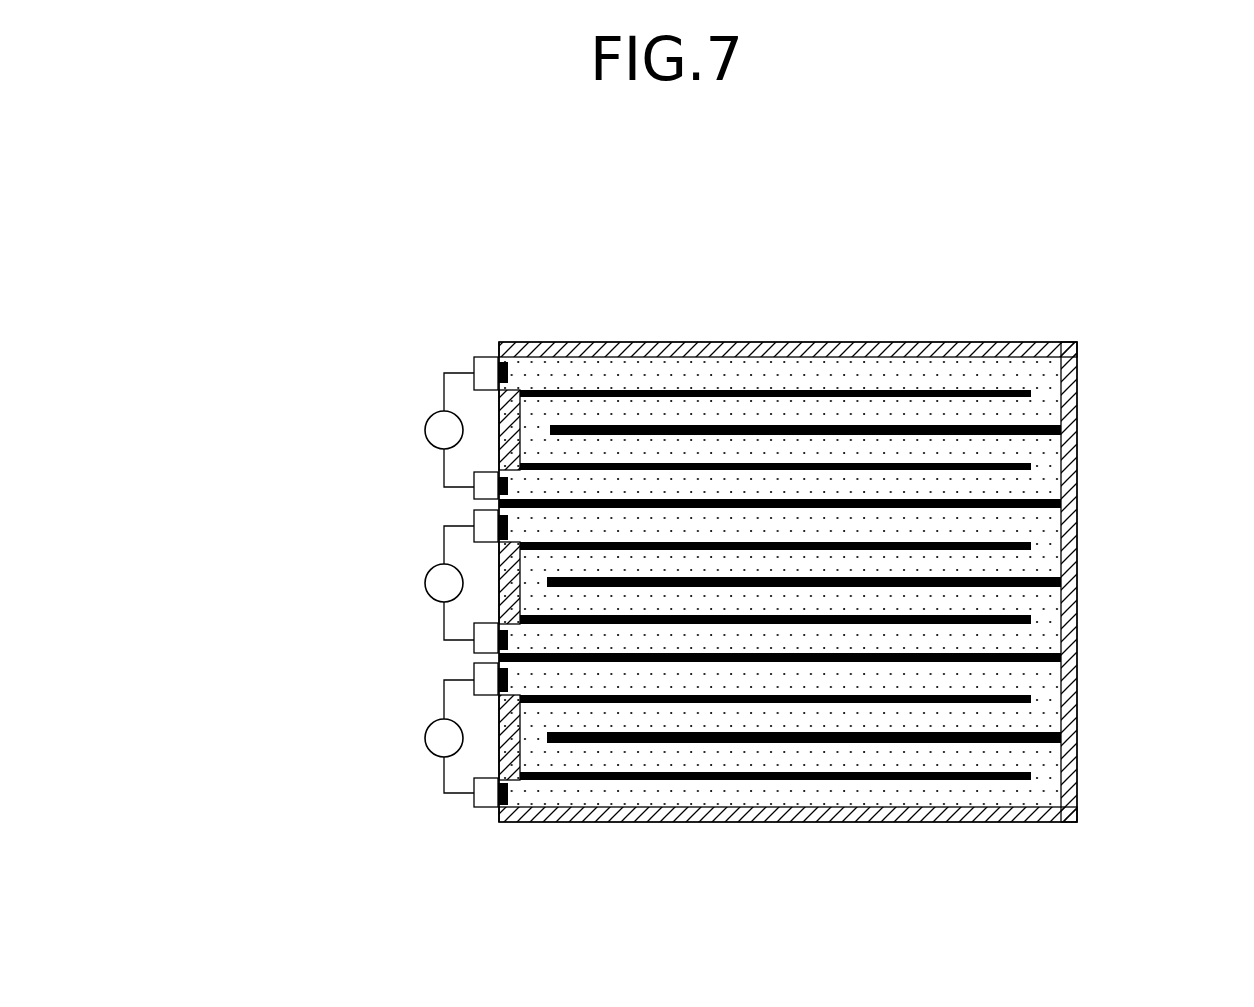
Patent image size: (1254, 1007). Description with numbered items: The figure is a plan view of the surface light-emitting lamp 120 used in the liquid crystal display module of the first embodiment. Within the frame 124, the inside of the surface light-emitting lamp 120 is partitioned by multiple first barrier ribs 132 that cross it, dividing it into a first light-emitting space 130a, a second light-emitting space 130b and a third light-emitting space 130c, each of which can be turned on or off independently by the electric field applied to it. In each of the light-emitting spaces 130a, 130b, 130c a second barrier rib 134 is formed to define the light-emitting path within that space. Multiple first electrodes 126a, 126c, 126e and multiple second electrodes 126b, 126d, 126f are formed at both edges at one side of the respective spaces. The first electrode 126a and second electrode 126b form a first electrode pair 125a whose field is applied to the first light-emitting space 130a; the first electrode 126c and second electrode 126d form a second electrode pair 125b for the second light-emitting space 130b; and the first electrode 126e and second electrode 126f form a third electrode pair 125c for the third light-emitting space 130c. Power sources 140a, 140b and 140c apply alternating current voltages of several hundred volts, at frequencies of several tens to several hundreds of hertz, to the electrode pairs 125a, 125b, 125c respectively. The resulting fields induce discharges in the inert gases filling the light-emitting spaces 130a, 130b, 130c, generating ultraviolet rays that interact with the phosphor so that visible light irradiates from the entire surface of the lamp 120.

The surface light-emitting lamp 120 is at (1024, 277).
The frame 124 is at (1075, 453).
The first electrode pair 125a is at (352, 388).
The second electrode pair 125b is at (289, 576).
The third electrode pair 125c is at (289, 729).
The first electrode 126a is at (476, 357).
The second electrode 126b is at (476, 473).
The first electrode 126c is at (443, 538).
The second electrode 126d is at (443, 622).
The first electrode 126e is at (443, 690).
The second electrode 126f is at (443, 780).
The first light-emitting space 130a is at (855, 370).
The second light-emitting space 130b is at (985, 640).
The third light-emitting space 130c is at (990, 795).
The first barrier rib 132 is at (1040, 652).
The second barrier rib 134 is at (697, 388).
The power source 140a is at (431, 413).
The power source 140b is at (426, 571).
The power source 140c is at (426, 729).